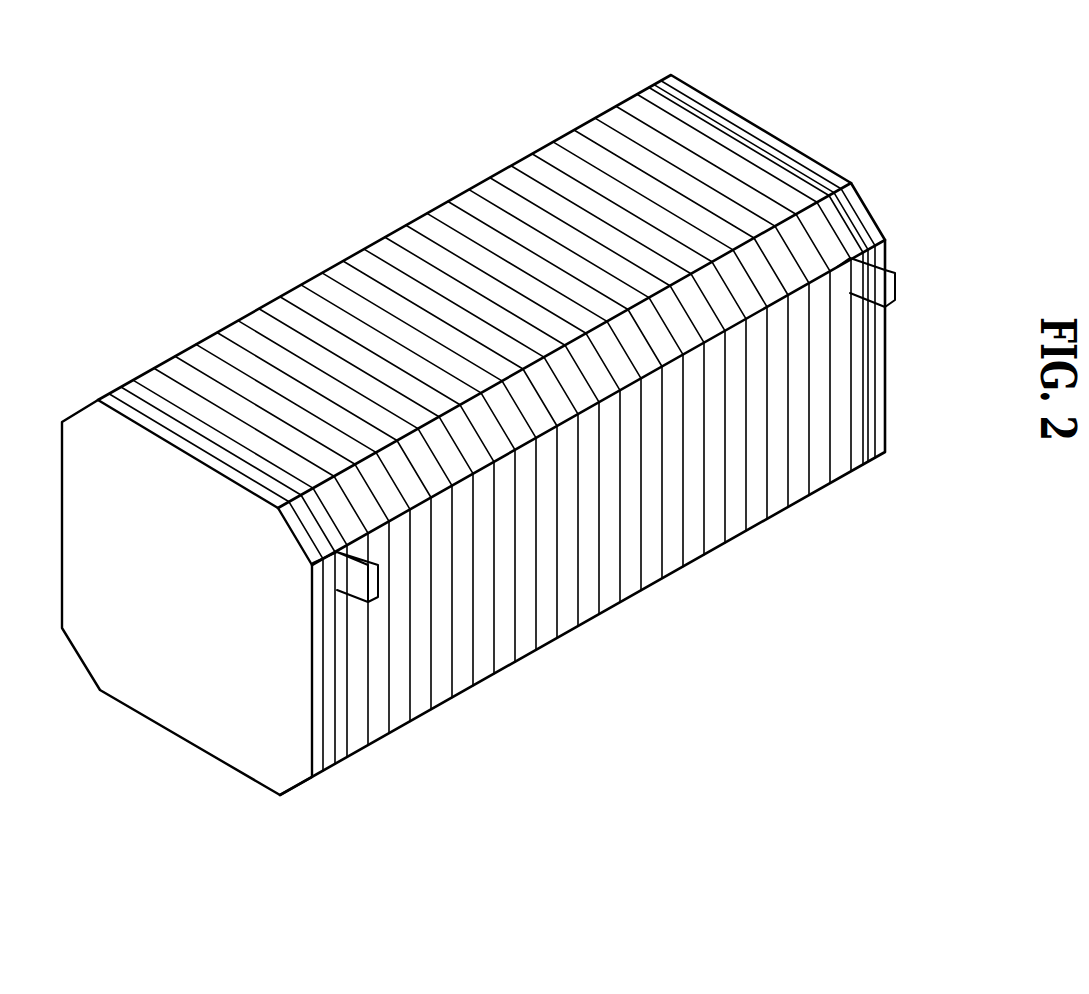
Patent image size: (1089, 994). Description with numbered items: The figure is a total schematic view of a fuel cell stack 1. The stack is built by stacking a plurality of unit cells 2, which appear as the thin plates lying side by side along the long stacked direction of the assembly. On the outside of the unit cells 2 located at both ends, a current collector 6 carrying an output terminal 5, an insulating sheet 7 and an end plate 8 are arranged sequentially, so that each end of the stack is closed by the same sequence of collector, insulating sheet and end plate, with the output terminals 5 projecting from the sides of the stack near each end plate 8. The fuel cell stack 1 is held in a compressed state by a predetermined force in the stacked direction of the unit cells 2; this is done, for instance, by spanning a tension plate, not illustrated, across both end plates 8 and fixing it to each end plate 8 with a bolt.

The fuel cell stack 1 is at (351, 178).
The unit cells 2 is at (378, 725).
The output terminal 5 is at (350, 577).
The current collector 6 is at (340, 750).
The insulating sheet 7 is at (330, 755).
The end plate 8 is at (275, 777).